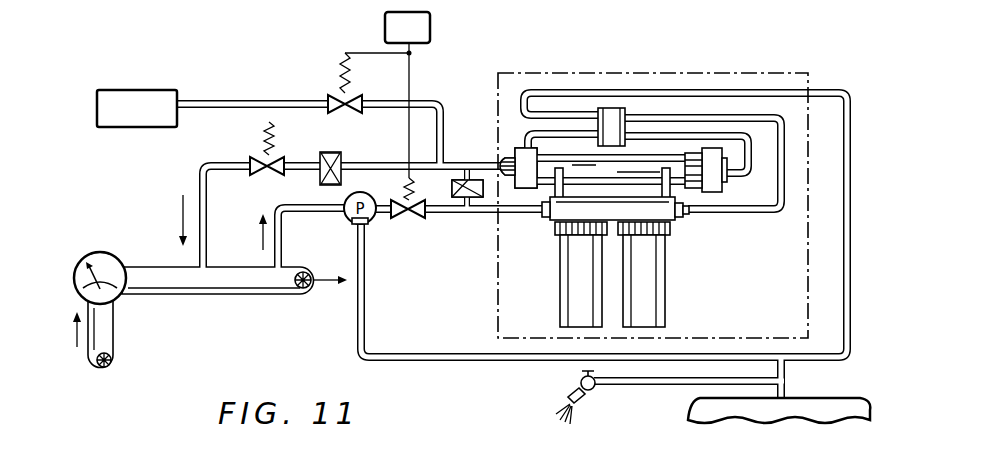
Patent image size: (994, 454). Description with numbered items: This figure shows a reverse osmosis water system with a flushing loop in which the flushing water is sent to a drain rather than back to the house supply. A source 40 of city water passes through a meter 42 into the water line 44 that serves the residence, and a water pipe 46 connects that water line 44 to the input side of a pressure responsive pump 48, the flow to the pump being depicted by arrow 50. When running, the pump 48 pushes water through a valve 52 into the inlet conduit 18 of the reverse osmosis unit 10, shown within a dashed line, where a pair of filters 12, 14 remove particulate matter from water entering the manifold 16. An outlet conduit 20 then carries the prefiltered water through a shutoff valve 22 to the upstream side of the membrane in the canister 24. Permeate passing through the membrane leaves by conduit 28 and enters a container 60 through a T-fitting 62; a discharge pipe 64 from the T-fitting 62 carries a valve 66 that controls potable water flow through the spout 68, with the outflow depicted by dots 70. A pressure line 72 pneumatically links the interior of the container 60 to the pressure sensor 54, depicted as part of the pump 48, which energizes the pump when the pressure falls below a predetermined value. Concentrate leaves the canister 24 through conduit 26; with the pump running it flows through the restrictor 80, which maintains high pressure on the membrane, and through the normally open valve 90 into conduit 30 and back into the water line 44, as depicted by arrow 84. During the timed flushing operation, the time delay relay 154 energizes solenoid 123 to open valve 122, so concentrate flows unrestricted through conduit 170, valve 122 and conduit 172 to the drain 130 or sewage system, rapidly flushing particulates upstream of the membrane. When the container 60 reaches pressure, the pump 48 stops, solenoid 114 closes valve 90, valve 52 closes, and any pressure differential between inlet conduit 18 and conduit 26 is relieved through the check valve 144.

The reverse osmosis unit 10 is at (498, 300).
The filter 12 is at (666, 286).
The filter 14 is at (560, 289).
The manifold 16 is at (684, 218).
The inlet conduit 18 is at (514, 214).
The outlet conduit 20 is at (744, 215).
The shutoff valve 22 is at (624, 142).
The canister 24 is at (592, 172).
The conduit 26 is at (500, 163).
The conduit 28 is at (853, 128).
The conduit 30 is at (200, 178).
The source of city water 40 is at (72, 333).
The meter 42 is at (80, 262).
The water line 44 is at (153, 297).
The water pipe 46 is at (312, 204).
The pressure responsive pump 48 is at (404, 180).
The arrow 50 is at (262, 230).
The valve 52 is at (423, 218).
The pressure sensor 54 is at (352, 224).
The container 60 is at (841, 398).
The T-fitting 62 is at (786, 394).
The discharge pipe 64 is at (618, 389).
The valve 66 is at (580, 388).
The spout 68 is at (573, 404).
The dots 70 is at (546, 405).
The pressure line 72 is at (448, 354).
The restrictor 80 is at (339, 158).
The arrow 84 is at (171, 220).
The valve 90 is at (252, 160).
The solenoid 114 is at (262, 124).
The valve 122 is at (327, 98).
The solenoid 123 is at (338, 64).
The drain 130 is at (146, 90).
The check valve 144 is at (485, 197).
The time delay relay 154 is at (385, 27).
The conduit 170 is at (438, 108).
The conduit 172 is at (247, 99).